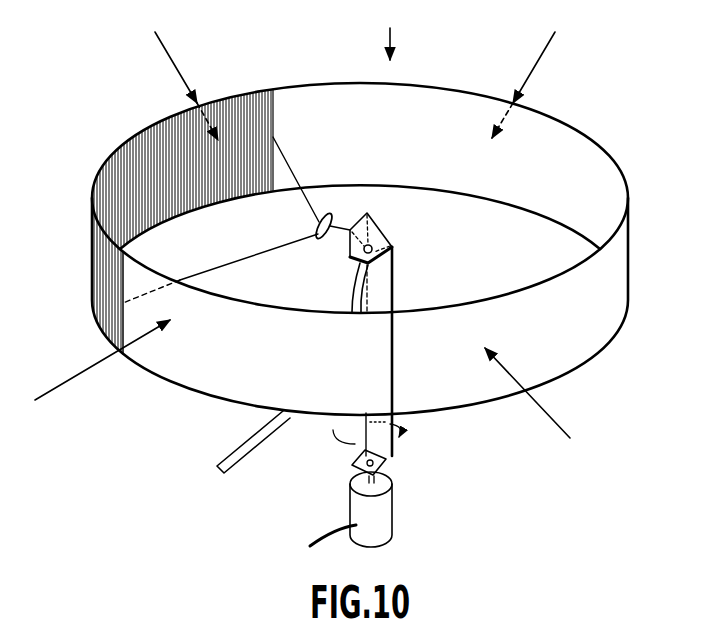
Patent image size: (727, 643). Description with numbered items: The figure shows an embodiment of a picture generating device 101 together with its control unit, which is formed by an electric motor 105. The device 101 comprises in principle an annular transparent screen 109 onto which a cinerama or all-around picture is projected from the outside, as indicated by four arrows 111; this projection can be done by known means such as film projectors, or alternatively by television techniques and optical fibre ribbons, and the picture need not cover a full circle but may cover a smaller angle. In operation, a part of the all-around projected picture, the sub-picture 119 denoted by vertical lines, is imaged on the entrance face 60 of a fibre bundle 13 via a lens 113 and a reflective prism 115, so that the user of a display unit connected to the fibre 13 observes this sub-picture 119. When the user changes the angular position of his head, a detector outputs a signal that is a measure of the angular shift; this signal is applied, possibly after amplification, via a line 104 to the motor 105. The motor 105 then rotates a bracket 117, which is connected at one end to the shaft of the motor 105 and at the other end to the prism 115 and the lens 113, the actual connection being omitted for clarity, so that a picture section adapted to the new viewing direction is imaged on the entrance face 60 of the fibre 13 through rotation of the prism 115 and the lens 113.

The picture generating device 101 is at (406, 25).
The annular transparent screen 109 is at (596, 165).
The arrows 111 is at (168, 50).
The lens 113 is at (317, 223).
The reflective prism 115 is at (374, 230).
The bracket 117 is at (382, 291).
The sub-picture 119 is at (138, 168).
The fibre bundle 13 is at (350, 308).
The entrance face 60 is at (393, 253).
The line 104 is at (333, 530).
The electric motor 105 is at (378, 523).